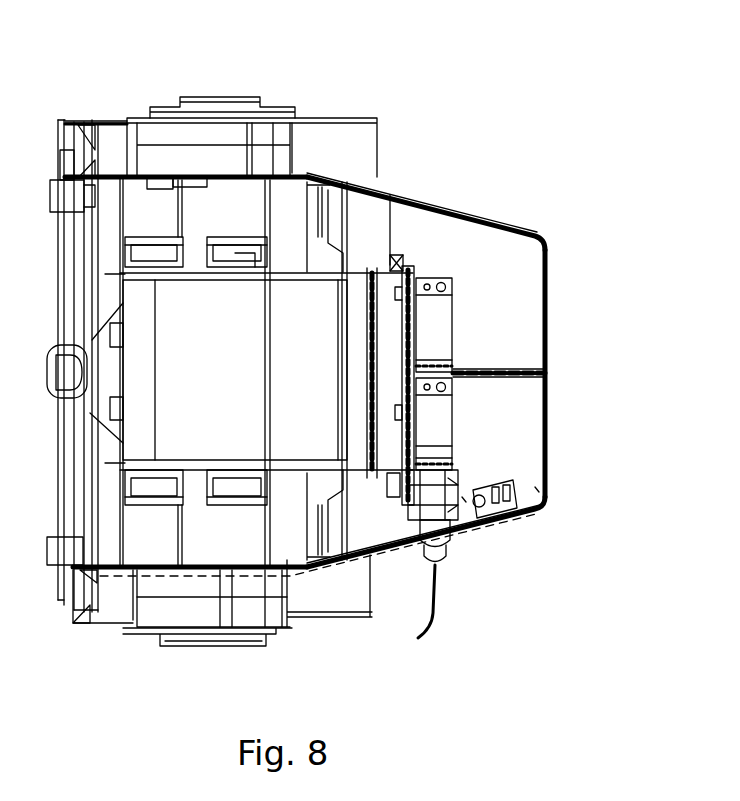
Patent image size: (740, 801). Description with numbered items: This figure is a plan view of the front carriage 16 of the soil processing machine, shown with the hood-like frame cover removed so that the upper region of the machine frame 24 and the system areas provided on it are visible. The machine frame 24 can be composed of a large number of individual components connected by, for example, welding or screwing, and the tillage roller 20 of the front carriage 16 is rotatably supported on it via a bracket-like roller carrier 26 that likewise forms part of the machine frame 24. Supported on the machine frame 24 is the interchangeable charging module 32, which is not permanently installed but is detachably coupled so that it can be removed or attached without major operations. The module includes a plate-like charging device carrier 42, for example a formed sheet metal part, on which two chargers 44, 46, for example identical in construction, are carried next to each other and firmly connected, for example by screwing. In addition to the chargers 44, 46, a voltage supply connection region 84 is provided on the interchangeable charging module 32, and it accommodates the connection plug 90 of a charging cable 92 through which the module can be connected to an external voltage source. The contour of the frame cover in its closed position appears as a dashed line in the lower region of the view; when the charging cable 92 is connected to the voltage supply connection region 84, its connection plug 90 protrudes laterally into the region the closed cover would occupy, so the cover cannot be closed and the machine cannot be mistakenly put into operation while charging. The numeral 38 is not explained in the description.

The front carriage 16 is at (437, 153).
The tillage roller 20 is at (345, 118).
The roller carrier 26 is at (155, 132).
The machine frame 24 is at (405, 203).
The interchangeable charging module 32 is at (493, 287).
The charging device carrier 42 is at (390, 283).
The charger 46 is at (455, 325).
The charger 44 is at (455, 427).
The voltage supply connection region 84 is at (460, 480).
The terminal block 38 is at (510, 525).
The connection plug 90 is at (450, 560).
The charging cable 92 is at (450, 605).